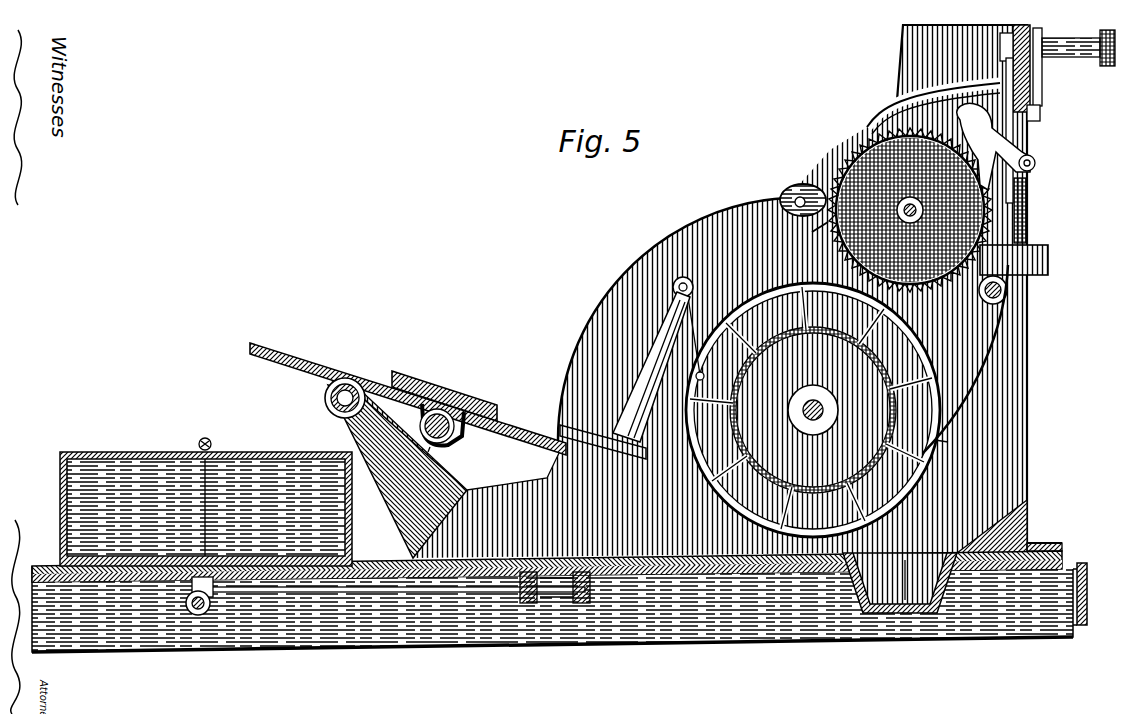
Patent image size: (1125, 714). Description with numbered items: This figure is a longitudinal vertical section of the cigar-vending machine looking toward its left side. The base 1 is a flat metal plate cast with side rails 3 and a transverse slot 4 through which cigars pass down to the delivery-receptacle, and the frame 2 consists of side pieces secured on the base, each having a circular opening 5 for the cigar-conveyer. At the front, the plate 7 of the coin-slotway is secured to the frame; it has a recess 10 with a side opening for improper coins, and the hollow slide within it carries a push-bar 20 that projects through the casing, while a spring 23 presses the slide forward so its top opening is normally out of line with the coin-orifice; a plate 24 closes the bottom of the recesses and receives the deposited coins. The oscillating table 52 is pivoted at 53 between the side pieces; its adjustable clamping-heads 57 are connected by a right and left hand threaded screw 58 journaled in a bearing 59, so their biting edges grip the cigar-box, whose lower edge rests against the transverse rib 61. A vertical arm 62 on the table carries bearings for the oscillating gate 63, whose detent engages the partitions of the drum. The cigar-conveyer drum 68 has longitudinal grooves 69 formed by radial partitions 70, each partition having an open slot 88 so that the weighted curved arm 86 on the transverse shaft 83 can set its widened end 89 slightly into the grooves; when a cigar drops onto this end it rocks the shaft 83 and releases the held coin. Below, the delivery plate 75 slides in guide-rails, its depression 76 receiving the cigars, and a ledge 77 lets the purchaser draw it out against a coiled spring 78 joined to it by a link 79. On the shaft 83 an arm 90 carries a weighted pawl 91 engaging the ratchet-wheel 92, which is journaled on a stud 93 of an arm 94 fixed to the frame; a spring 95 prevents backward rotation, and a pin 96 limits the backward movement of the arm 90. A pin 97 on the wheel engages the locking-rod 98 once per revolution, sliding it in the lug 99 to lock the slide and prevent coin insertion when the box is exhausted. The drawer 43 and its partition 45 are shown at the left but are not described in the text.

The base 1 is at (1063, 557).
The frame 2 is at (698, 238).
The side rails 3 is at (552, 609).
The transverse slot 4 is at (908, 598).
The circular opening 5 is at (903, 505).
The plate 7 is at (1028, 30).
The recess 10 is at (741, 463).
The push-bar 20 is at (1075, 48).
The spring 23 is at (1010, 44).
The plate 24 is at (1040, 113).
The drawer 43 is at (206, 509).
The drawer partition 45 is at (237, 497).
The oscillating table 52 is at (345, 378).
The pivot 53 is at (370, 380).
The clamping-heads 57 is at (468, 393).
The right and left hand threaded screw 58 is at (456, 441).
The bearing 59 is at (428, 448).
The transverse rib 61 is at (625, 432).
The vertical arm 62 is at (662, 348).
The oscillating gate 63 is at (698, 297).
The cigar-conveyer drum 68 is at (813, 430).
The longitudinal grooves 69 is at (817, 410).
The radial partitions 70 is at (867, 374).
The plate 75 is at (695, 592).
The depression 76 is at (900, 583).
The ledge 77 is at (1088, 597).
The coiled spring 78 is at (282, 594).
The link 79 is at (478, 593).
The transverse shaft 83 is at (1008, 290).
The curved arm 86 is at (972, 356).
The open slot 88 is at (838, 410).
The widened end 89 is at (935, 440).
The arm 90 is at (1028, 190).
The weighted pawl 91 is at (968, 122).
The ratchet-wheel 92 is at (846, 152).
The stud 93 is at (911, 197).
The arm 94 is at (803, 186).
The spring 95 is at (887, 110).
The pin 96 is at (1035, 167).
The pin 97 is at (815, 228).
The locking-rod 98 is at (1013, 142).
The lug 99 is at (1040, 93).